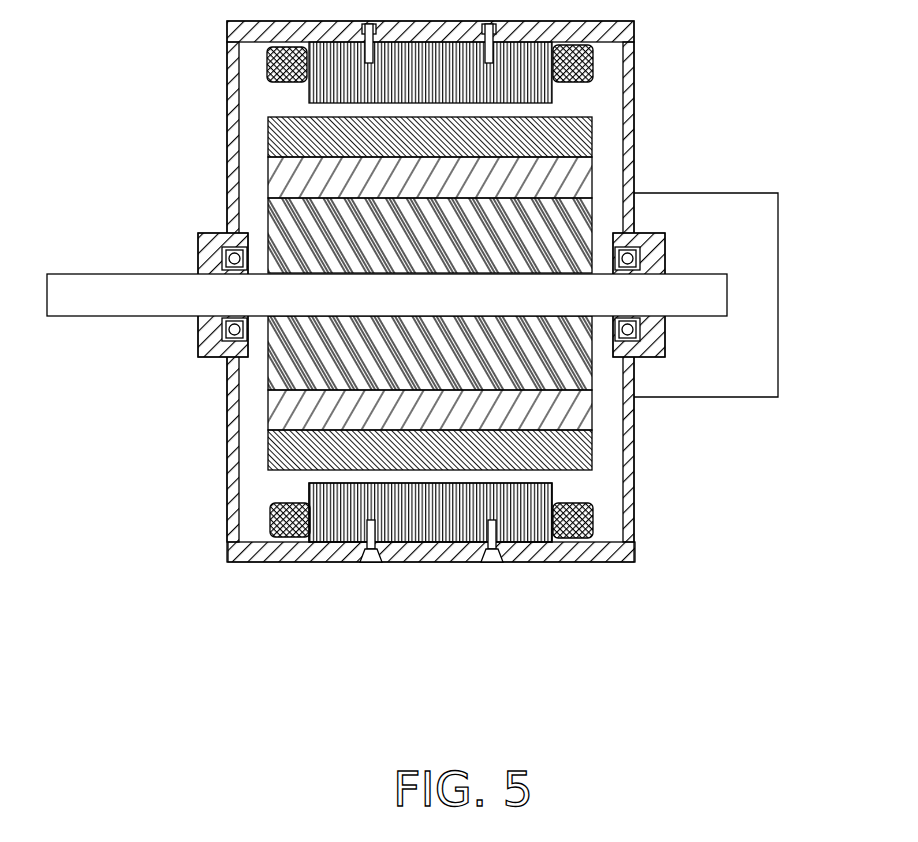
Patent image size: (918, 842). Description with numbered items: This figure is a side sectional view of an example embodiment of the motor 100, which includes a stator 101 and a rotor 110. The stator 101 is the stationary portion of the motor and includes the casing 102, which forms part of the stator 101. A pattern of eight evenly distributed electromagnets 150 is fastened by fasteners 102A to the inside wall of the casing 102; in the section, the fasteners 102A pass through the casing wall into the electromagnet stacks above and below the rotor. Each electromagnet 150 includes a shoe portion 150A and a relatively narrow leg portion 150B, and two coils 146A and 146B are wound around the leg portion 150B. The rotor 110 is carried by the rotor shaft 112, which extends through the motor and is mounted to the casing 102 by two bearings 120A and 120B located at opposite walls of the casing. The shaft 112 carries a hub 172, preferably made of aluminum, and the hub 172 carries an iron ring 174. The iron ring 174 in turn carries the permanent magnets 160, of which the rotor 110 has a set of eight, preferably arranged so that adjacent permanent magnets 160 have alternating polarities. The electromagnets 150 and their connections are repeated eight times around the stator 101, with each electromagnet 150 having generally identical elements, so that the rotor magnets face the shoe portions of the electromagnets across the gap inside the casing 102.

The motor 100 is at (200, 111).
The stator 101 is at (459, 334).
The casing 102 is at (272, 563).
The fasteners 102A is at (493, 563).
The rotor 110 is at (433, 288).
The rotor shaft 112 is at (127, 305).
The bearing 120A is at (665, 345).
The bearing 120B is at (196, 350).
The coil 146A is at (635, 563).
The coil 146B is at (635, 563).
The electromagnet 150 is at (521, 347).
The shoe portion 150A is at (555, 482).
The leg portion 150B is at (519, 533).
The permanent magnet 160 is at (592, 452).
The hub 172 is at (593, 215).
The iron ring 174 is at (593, 178).